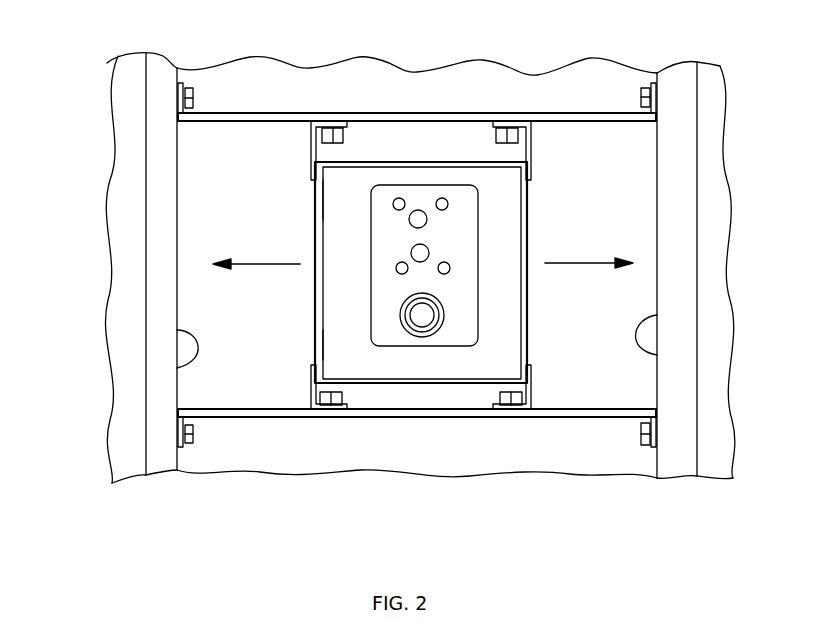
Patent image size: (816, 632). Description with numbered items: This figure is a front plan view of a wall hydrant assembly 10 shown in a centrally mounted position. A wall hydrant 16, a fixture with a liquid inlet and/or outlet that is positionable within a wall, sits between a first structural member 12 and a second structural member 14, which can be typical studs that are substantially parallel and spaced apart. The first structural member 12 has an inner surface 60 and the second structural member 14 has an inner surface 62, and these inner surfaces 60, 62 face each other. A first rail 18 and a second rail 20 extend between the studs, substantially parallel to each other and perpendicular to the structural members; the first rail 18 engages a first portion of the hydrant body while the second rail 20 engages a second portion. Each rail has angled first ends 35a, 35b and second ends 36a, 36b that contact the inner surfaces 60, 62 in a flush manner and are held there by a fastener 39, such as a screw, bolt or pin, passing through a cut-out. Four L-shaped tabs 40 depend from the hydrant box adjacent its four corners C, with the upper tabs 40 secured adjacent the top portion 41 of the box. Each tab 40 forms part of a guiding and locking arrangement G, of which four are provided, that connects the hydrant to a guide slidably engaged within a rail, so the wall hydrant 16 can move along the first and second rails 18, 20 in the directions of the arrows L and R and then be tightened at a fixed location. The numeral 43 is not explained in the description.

The wall hydrant assembly 10 is at (566, 515).
The first structural member 12 is at (167, 138).
The second structural member 14 is at (682, 115).
The wall hydrant 16 is at (522, 185).
The first rail 18 is at (230, 118).
The second rail 20 is at (230, 412).
The first end of first rail 35a is at (182, 86).
The first end of second rail 35b is at (183, 448).
The second end of first rail 36a is at (655, 83).
The second end of second rail 36b is at (653, 448).
The fastener 39 is at (196, 94).
The tab 40 is at (312, 150).
The top portion of the box 41 is at (321, 200).
The housing side wall lower portion 43 is at (321, 343).
The inner surface of first structural member 60 is at (177, 368).
The inner surface of second structural member 62 is at (657, 355).
The corner C is at (320, 153).
The guiding and locking arrangement G is at (296, 133).
The arrow L is at (260, 268).
The arrow R is at (582, 267).